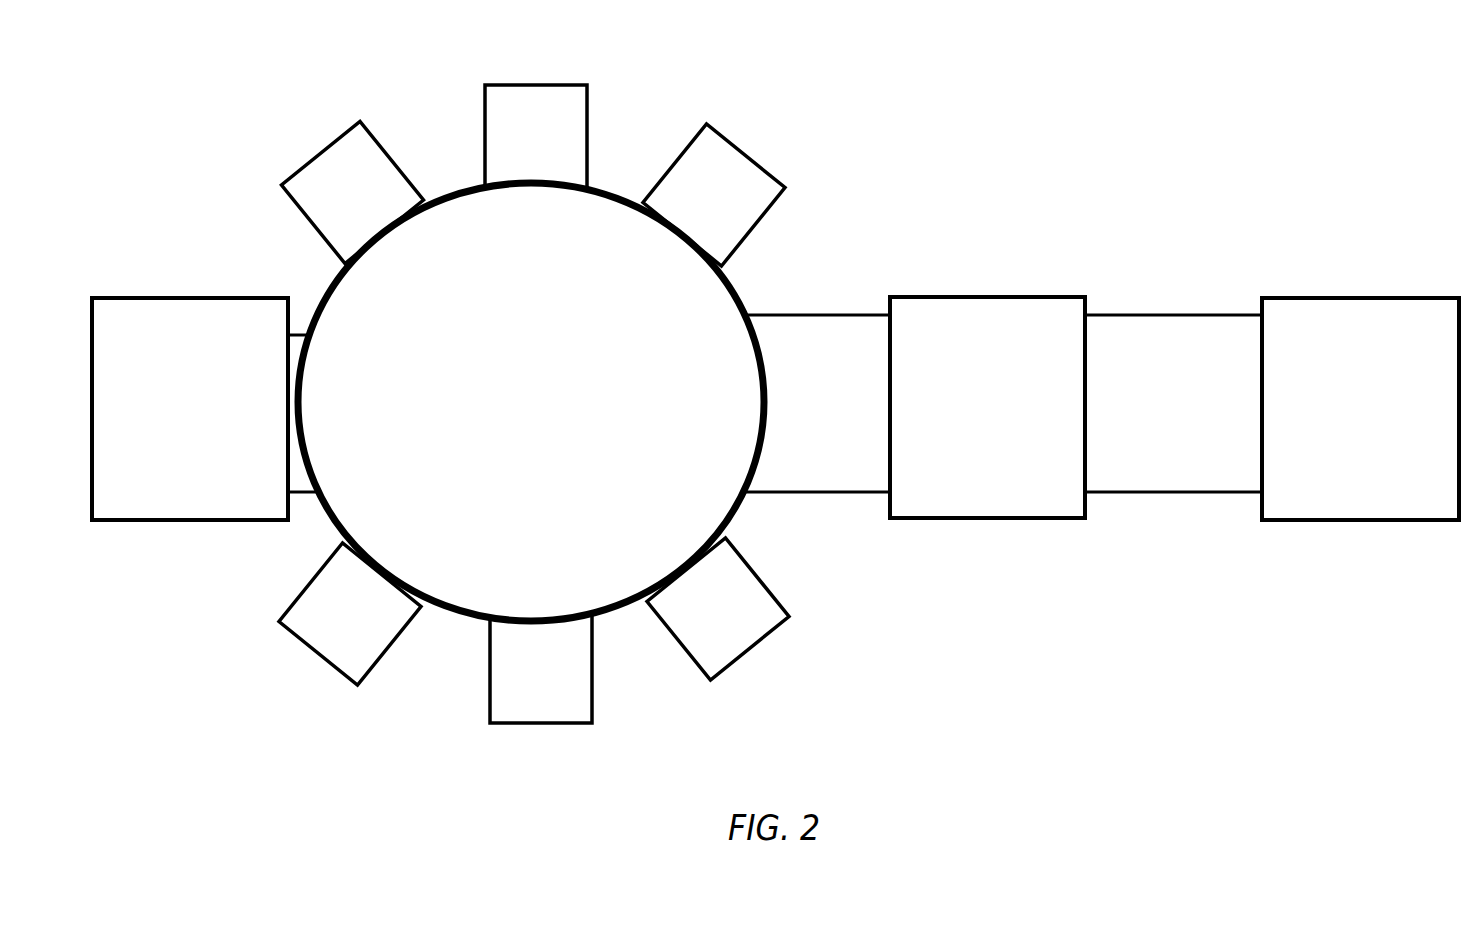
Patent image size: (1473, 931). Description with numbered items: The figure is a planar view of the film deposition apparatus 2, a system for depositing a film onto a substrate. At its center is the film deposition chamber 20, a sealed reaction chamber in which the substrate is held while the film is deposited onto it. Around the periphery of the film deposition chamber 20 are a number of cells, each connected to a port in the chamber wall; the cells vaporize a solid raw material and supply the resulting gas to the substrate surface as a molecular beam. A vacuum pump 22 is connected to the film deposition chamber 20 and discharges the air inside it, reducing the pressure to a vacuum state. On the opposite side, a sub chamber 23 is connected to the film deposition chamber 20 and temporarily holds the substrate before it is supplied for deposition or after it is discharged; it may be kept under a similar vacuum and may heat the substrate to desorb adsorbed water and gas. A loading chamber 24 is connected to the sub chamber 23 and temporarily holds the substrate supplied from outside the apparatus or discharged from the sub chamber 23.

The film deposition apparatus 2 is at (915, 101).
The film deposition chamber 20 is at (627, 196).
The vacuum pump 22 is at (194, 295).
The sub chamber 23 is at (987, 295).
The loading chamber 24 is at (1363, 295).